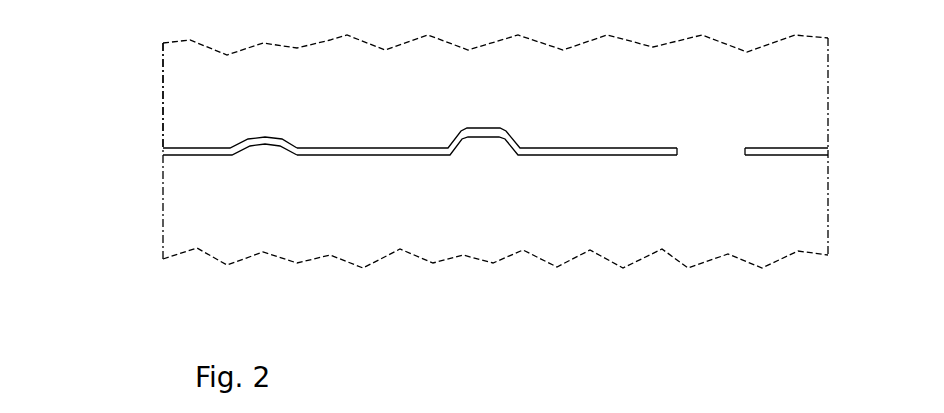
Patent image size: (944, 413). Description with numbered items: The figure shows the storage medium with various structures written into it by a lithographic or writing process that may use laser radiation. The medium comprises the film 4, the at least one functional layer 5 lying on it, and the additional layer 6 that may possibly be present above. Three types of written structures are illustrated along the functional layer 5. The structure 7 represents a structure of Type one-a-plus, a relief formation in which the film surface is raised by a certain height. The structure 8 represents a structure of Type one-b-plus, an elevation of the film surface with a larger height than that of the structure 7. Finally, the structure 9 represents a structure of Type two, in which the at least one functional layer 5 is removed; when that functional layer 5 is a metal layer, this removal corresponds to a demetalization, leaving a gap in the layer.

The film 4 is at (160, 207).
The functional layer 5 is at (439, 145).
The additional layer 6 is at (158, 92).
The structure 7 is at (230, 166).
The structure 8 is at (487, 162).
The structure 9 is at (711, 172).